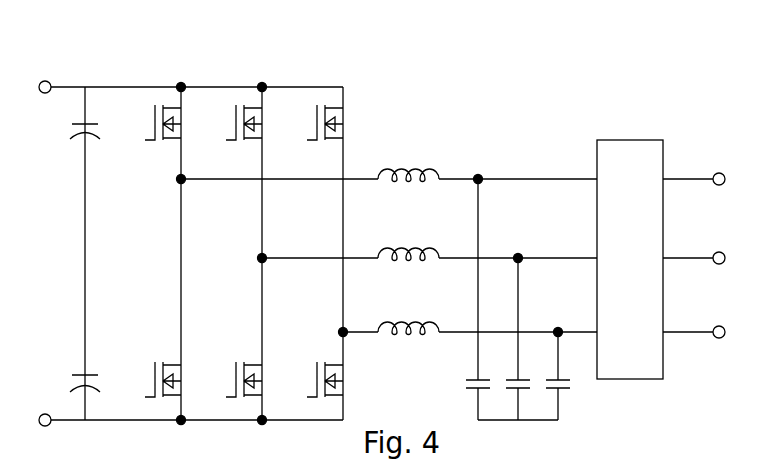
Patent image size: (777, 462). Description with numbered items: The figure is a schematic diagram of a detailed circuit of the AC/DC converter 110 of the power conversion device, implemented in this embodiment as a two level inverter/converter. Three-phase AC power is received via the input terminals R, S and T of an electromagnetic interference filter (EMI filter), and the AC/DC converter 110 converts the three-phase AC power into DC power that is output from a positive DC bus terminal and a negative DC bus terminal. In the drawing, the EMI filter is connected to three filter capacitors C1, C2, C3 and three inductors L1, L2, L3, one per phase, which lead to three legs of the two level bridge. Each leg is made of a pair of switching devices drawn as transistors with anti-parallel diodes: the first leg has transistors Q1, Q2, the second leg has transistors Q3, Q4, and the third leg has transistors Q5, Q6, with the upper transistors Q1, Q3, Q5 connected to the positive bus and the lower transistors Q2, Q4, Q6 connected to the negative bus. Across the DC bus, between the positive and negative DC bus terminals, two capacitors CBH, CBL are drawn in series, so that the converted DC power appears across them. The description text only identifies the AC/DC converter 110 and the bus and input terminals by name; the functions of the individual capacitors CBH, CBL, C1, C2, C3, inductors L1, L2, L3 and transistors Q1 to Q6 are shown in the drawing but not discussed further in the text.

The AC/DC converter 110 is at (120, 64).
The upper DC-link capacitor CBH is at (104, 146).
The lower DC-link capacitor CBL is at (101, 370).
The switching transistor Q1 is at (180, 131).
The switching transistor Q2 is at (180, 375).
The switching transistor Q3 is at (260, 131).
The switching transistor Q4 is at (260, 375).
The switching transistor Q5 is at (340, 131).
The switching transistor Q6 is at (340, 375).
The output inductor L1 is at (408, 160).
The output inductor L2 is at (408, 239).
The output inductor L3 is at (408, 313).
The filter capacitor C1 is at (471, 299).
The filter capacitor C2 is at (511, 339).
The filter capacitor C3 is at (551, 376).